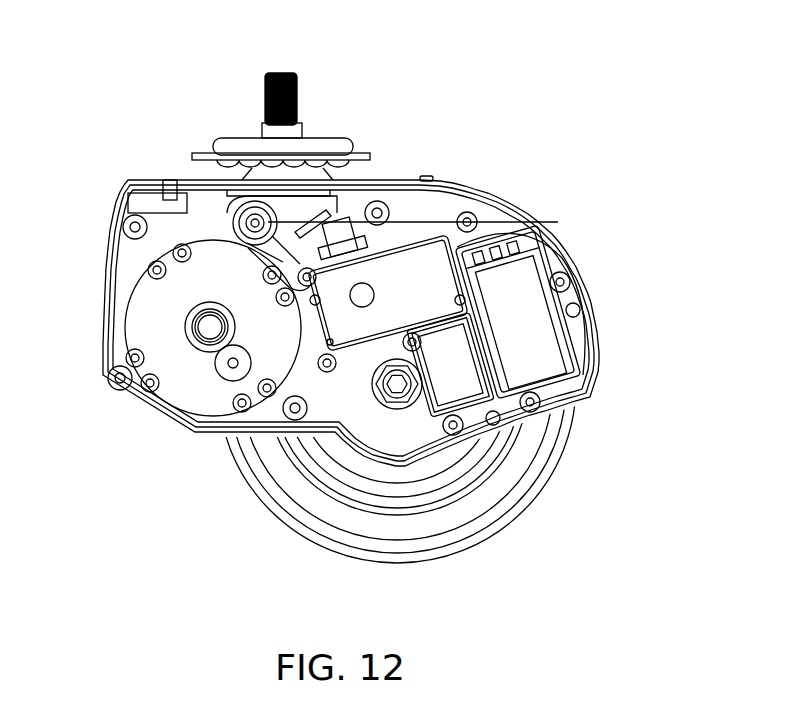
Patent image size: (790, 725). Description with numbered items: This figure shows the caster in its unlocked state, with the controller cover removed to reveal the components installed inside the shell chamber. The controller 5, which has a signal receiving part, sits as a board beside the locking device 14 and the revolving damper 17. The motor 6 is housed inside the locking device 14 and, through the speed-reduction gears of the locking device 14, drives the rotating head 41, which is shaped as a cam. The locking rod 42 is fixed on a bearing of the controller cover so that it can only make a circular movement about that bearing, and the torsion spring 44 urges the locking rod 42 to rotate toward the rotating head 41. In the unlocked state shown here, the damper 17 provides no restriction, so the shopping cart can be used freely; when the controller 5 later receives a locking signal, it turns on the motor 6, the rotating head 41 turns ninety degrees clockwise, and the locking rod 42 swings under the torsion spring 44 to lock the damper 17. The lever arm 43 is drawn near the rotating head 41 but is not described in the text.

The locking device 14 is at (351, 281).
The controller 5 is at (437, 258).
The motor 6 is at (543, 415).
The revolving damper 17 is at (181, 410).
The rotating head 41 is at (294, 135).
The locking rod 42 is at (230, 124).
The lever arm 43 is at (185, 150).
The torsion spring 44 is at (213, 423).